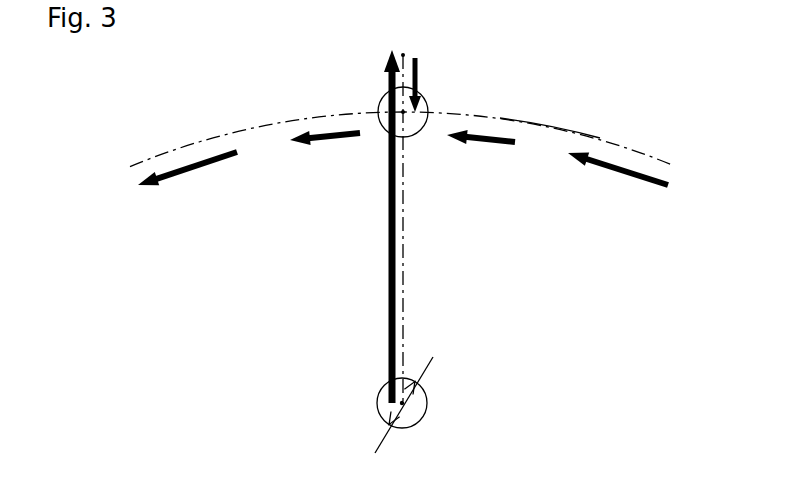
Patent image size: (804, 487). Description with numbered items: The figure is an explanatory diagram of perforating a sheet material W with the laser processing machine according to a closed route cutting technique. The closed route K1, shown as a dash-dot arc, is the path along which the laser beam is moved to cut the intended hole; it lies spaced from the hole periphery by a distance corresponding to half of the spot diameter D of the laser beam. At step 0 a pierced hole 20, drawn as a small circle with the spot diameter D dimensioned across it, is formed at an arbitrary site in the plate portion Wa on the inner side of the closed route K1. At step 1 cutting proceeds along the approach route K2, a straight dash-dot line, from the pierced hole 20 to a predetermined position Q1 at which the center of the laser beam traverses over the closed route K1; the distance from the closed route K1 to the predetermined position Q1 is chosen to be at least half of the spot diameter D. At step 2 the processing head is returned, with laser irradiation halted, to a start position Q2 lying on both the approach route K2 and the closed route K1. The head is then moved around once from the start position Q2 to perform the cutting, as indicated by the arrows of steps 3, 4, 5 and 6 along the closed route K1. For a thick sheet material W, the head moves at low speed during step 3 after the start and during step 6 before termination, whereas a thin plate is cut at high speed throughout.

The closed route K1 is at (272, 125).
The approach route K2 is at (403, 233).
The sheet material W is at (558, 125).
The plate portion Wa is at (557, 272).
The predetermined position Q1 is at (403, 55).
The start position Q2 is at (403, 112).
The spot diameter D is at (409, 390).
The pierced hole 20 is at (425, 410).
The step 0 is at (378, 406).
The step 1 is at (375, 226).
The step 2 is at (432, 85).
The step 3 is at (325, 154).
The step 4 is at (187, 181).
The step 5 is at (618, 182).
The step 6 is at (481, 155).